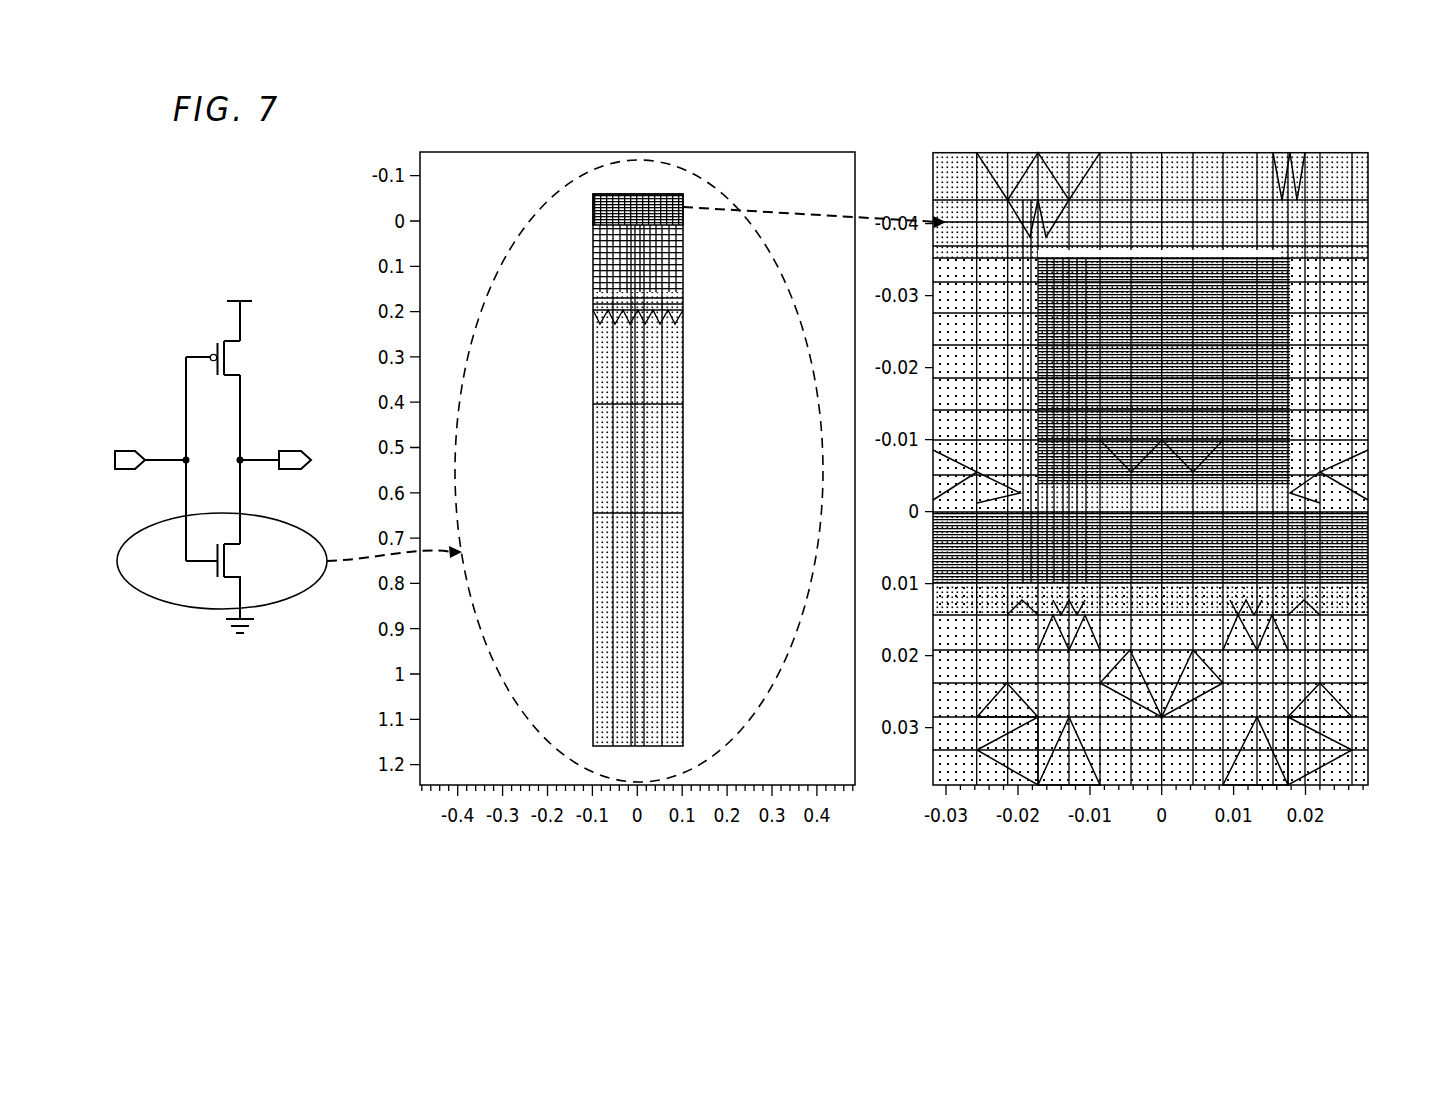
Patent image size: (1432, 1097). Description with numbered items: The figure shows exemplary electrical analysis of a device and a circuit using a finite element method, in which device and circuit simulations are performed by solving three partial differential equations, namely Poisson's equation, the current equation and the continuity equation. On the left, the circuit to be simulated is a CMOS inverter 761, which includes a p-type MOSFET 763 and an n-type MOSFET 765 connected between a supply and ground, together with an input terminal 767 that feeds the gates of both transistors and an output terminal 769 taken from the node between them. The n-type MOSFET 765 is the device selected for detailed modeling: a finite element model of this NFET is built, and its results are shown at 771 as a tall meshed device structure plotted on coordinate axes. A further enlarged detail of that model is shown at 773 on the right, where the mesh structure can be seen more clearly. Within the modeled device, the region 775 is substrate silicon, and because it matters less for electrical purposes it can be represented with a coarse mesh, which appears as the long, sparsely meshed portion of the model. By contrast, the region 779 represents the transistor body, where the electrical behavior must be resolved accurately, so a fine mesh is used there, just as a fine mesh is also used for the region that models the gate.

The CMOS inverter 761 is at (163, 260).
The p-type MOSFET 763 is at (227, 339).
The n-type MOSFET 765 is at (215, 575).
The input terminal 767 is at (125, 449).
The output terminal 769 is at (291, 449).
The finite element model results 771 is at (683, 682).
The detail of finite element model 773 is at (1368, 730).
The substrate silicon region 775 is at (585, 748).
The transistor body region 779 is at (1368, 550).